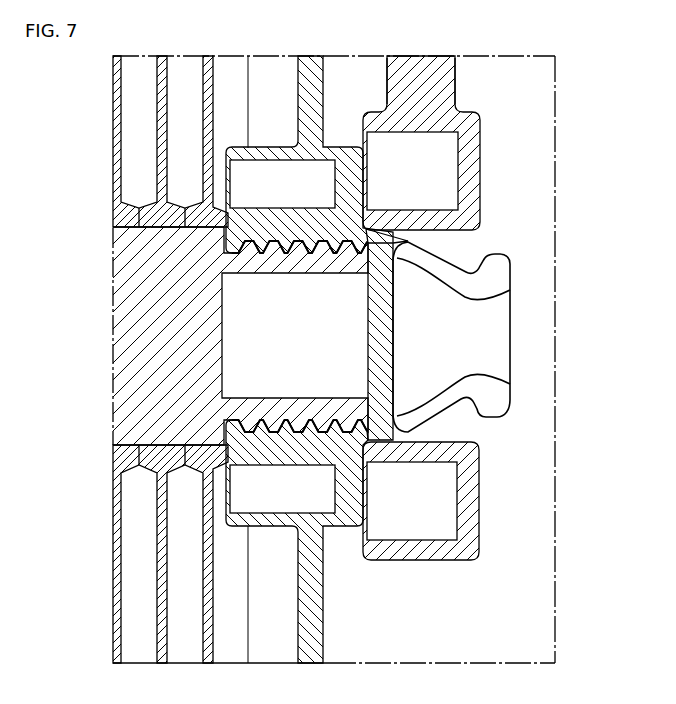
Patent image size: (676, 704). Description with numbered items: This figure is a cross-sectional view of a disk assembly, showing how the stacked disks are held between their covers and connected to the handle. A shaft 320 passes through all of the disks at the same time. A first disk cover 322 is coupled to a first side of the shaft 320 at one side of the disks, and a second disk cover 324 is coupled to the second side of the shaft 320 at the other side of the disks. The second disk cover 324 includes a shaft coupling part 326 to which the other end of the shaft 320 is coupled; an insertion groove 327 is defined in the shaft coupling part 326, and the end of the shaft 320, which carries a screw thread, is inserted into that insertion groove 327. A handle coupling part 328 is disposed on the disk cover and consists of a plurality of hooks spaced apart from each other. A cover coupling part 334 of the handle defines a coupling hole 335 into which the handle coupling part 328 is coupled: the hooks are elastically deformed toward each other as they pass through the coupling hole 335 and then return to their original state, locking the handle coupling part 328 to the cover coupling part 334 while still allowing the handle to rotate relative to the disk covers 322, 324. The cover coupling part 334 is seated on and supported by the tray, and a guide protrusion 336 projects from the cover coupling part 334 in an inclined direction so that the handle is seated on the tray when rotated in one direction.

The shaft 320 is at (125, 323).
The first disk cover 322 is at (226, 455).
The second disk cover 324 is at (315, 598).
The shaft coupling part 326 is at (263, 216).
The insertion groove 327 is at (227, 239).
The handle coupling part 328 is at (510, 335).
The cover coupling part 334 is at (480, 165).
The coupling hole 335 is at (457, 230).
The guide protrusion 336 is at (455, 82).